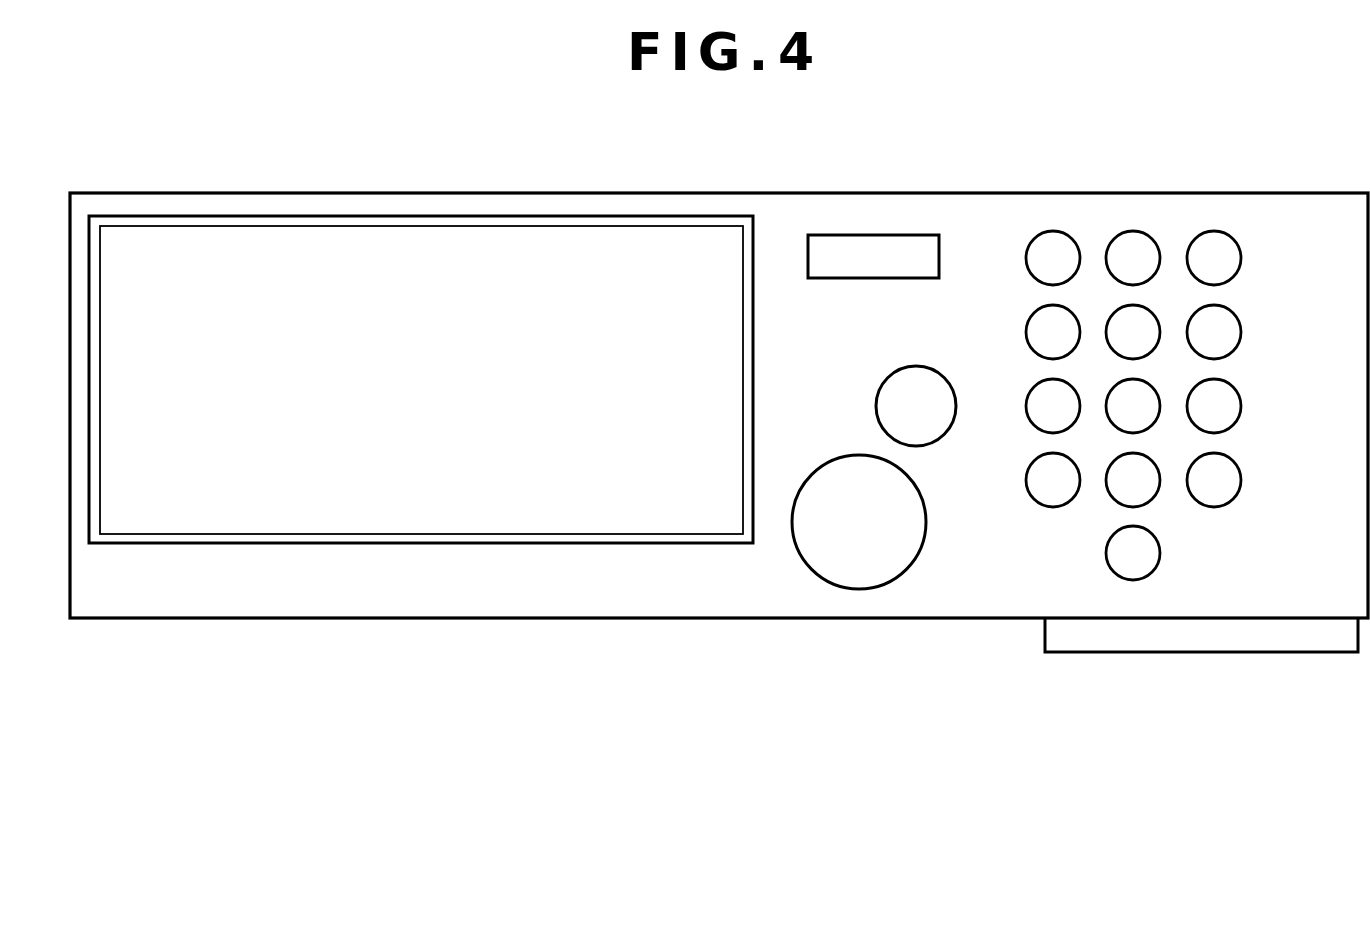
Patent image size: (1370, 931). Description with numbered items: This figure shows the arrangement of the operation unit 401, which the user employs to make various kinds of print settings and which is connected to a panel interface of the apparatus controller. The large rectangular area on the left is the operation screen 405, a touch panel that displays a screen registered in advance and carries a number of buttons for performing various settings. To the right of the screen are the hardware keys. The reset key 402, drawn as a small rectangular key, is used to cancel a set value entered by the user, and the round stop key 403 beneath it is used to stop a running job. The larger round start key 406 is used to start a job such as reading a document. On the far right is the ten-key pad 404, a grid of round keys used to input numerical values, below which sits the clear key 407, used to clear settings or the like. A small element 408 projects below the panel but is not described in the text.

The operation unit 401 is at (279, 192).
The reset key 402 is at (867, 233).
The stop key 403 is at (947, 376).
The ten-key pad 404 is at (1140, 221).
The operation screen 405 is at (514, 214).
The start key 406 is at (811, 570).
The clear key 407 is at (1158, 550).
The card reader / attachment unit 408 is at (1211, 644).